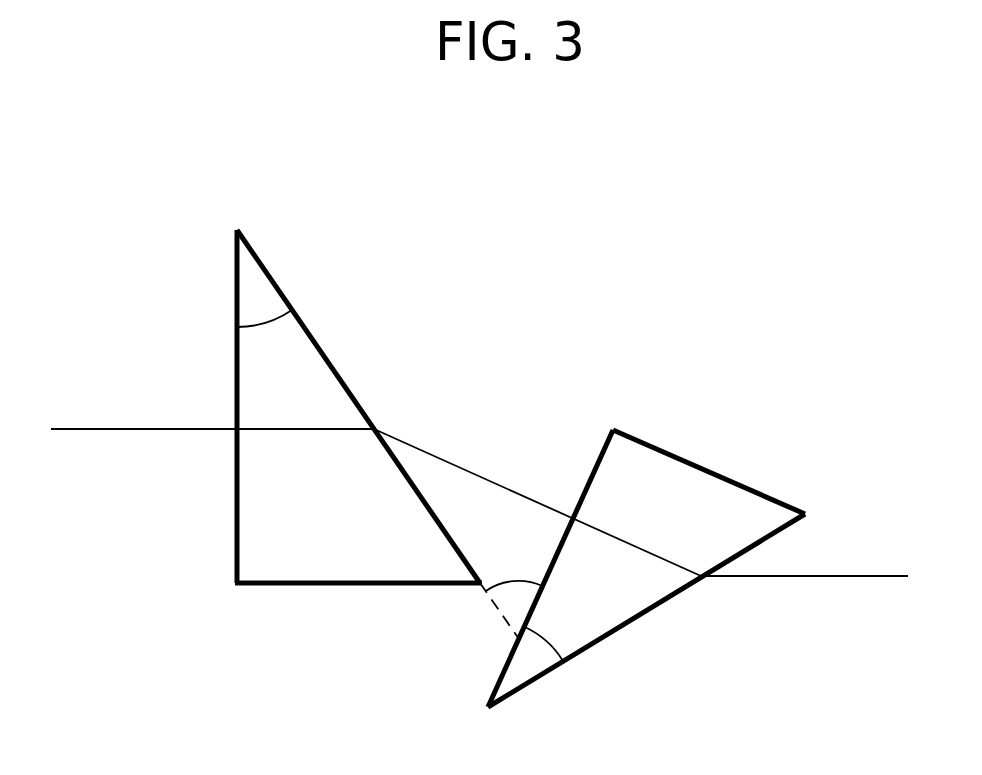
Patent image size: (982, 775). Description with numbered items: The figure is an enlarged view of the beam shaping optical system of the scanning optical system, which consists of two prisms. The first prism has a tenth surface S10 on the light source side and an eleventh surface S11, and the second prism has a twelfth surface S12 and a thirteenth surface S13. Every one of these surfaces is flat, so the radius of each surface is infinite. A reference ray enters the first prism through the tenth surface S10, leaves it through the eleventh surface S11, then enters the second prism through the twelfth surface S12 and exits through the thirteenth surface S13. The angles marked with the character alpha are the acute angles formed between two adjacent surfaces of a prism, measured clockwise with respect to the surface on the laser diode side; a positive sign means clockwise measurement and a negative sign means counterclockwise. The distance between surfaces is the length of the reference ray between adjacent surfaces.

The tenth surface S10 is at (237, 386).
The eleventh surface S11 is at (355, 393).
The twelfth surface S12 is at (594, 470).
The thirteenth surface S13 is at (638, 616).